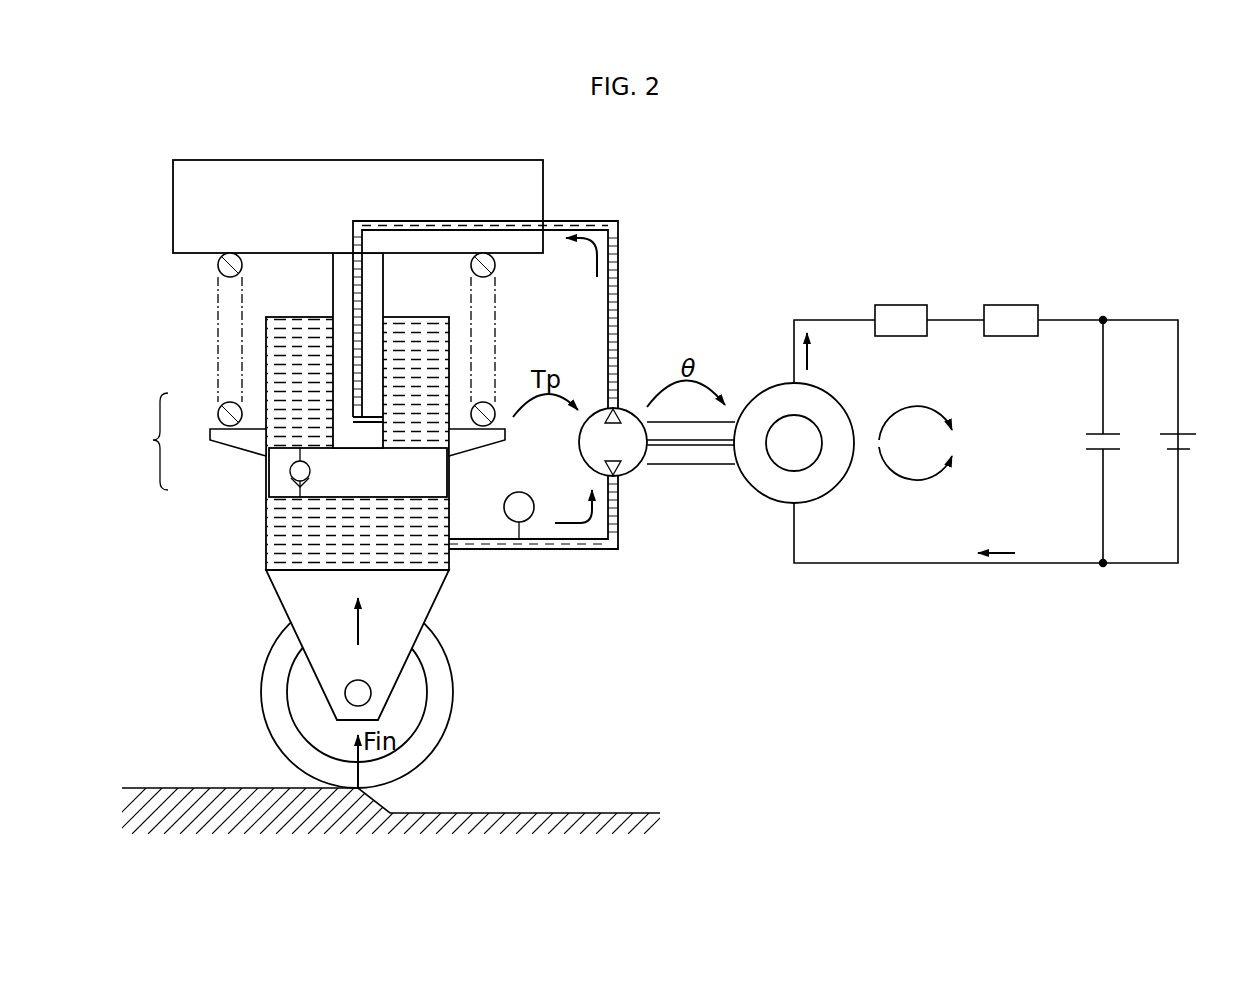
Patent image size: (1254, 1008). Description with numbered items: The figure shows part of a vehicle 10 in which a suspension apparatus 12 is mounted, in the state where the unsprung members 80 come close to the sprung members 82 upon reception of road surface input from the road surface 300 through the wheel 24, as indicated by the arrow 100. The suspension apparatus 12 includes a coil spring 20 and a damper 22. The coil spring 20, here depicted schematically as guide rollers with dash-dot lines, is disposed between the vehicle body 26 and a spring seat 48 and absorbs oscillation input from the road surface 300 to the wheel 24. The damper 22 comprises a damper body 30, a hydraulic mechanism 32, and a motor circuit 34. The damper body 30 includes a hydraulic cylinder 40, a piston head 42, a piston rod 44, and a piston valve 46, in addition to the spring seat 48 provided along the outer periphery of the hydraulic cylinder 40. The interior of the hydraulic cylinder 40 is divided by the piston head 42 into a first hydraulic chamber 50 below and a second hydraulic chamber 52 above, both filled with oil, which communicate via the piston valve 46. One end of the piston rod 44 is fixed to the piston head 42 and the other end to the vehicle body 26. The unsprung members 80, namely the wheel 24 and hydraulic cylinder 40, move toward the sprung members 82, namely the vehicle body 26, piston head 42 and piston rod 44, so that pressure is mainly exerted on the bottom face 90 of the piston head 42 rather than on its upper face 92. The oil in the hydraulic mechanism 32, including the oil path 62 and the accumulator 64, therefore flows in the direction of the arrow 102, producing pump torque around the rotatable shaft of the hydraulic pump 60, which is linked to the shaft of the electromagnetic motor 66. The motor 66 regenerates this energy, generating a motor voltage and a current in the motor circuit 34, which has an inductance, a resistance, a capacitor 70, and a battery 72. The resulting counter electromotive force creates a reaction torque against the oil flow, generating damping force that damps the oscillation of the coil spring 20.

The vehicle 10 is at (746, 129).
The suspension apparatus 12 is at (146, 441).
The coil spring 20 is at (226, 413).
The damper 22 is at (250, 492).
The wheel 24 is at (446, 680).
The vehicle body 26 is at (213, 163).
The damper body 30 is at (455, 330).
The hydraulic mechanism 32 is at (625, 253).
The motor circuit 34 is at (1004, 402).
The hydraulic cylinder 40 is at (378, 467).
The piston head 42 is at (441, 487).
The piston rod 44 is at (336, 282).
The piston valve 46 is at (312, 471).
The spring seat 48 is at (466, 442).
The first hydraulic chamber 50 is at (398, 555).
The second hydraulic chamber 52 is at (408, 468).
The hydraulic pump 60 is at (628, 468).
The oil path 62 is at (616, 303).
The accumulator 64 is at (522, 493).
The electromagnetic motor 66 is at (783, 400).
The capacitor 70 is at (1111, 432).
The battery 72 is at (1190, 432).
The unsprung members 80 is at (263, 617).
The sprung members 82 is at (509, 343).
The bottom face 90 is at (331, 498).
The upper face 92 is at (316, 447).
The arrow 100 is at (354, 636).
The arrow 102 is at (597, 267).
The road surface 300 is at (198, 786).